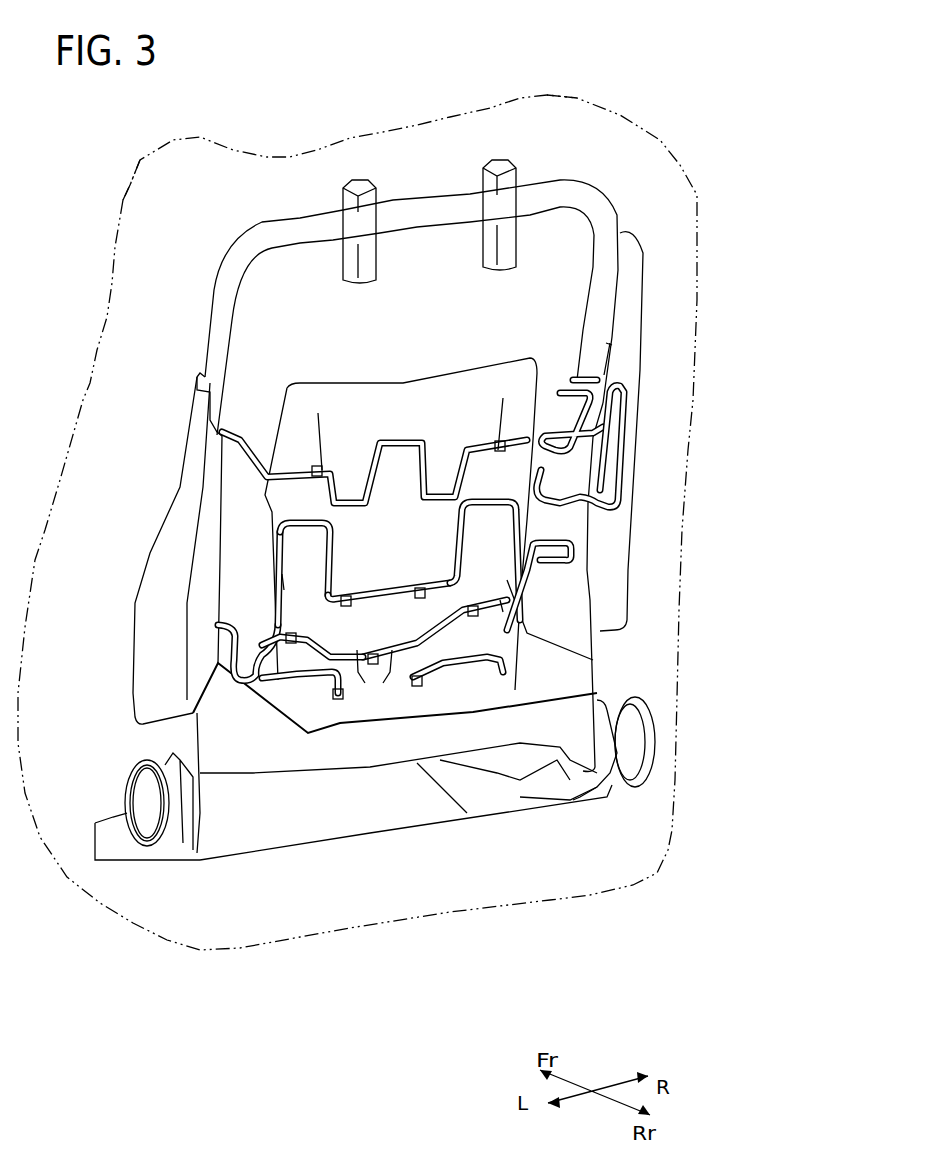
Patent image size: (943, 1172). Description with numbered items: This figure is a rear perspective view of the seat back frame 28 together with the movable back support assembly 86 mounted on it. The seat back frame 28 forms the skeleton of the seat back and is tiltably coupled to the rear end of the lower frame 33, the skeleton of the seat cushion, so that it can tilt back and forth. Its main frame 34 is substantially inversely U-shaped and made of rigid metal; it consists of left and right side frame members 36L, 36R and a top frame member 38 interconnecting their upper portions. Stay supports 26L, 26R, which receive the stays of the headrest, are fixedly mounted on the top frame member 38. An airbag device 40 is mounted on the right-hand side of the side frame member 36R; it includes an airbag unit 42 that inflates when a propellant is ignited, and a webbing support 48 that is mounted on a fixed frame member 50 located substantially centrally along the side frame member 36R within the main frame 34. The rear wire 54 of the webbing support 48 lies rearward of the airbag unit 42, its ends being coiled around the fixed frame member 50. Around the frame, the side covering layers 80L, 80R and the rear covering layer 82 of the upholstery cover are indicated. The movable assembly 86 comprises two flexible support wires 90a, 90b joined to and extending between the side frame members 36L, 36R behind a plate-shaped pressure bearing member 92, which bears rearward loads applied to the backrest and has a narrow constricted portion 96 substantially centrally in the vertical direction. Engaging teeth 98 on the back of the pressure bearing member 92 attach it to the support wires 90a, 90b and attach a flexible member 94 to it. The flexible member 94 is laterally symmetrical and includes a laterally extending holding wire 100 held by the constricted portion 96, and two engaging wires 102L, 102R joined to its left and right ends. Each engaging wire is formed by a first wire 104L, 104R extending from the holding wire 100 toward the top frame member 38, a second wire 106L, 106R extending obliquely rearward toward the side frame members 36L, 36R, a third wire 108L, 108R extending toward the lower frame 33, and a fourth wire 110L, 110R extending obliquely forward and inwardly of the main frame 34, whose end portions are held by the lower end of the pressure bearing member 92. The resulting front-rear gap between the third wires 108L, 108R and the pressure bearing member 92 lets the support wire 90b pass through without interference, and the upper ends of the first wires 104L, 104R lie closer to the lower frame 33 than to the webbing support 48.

The stay support 26L is at (360, 186).
The stay support 26R is at (500, 162).
The seat back frame 28 is at (458, 254).
The lower frame 33 is at (110, 820).
The main frame 34 is at (430, 254).
The side frame member 36L is at (135, 648).
The side frame member 36R is at (607, 643).
The top frame member 38 is at (290, 230).
The airbag device 40 is at (664, 323).
The airbag unit 42 is at (610, 565).
The webbing support 48 is at (648, 428).
The fixed frame member 50 is at (590, 382).
The rear wire 54 is at (620, 460).
The side covering layer 80L is at (123, 204).
The side covering layer 80R is at (570, 95).
The rear covering layer 82 is at (592, 897).
The movable back support assembly 86 is at (258, 414).
The support wire 90a is at (400, 445).
The support wire 90b is at (226, 630).
The pressure bearing member 92 is at (405, 390).
The flexible member 94 is at (405, 616).
The constricted portion 96 is at (270, 522).
The engaging teeth 98 is at (318, 465).
The holding wire 100 is at (383, 590).
The engaging wire 102L is at (262, 697).
The engaging wire 102R is at (492, 682).
The first wire 104L is at (310, 555).
The first wire 104R is at (460, 540).
The second wire 106L is at (300, 530).
The second wire 106R is at (480, 510).
The third wire 108L is at (282, 574).
The third wire 108R is at (500, 600).
The fourth wire 110L is at (307, 680).
The fourth wire 110R is at (445, 680).